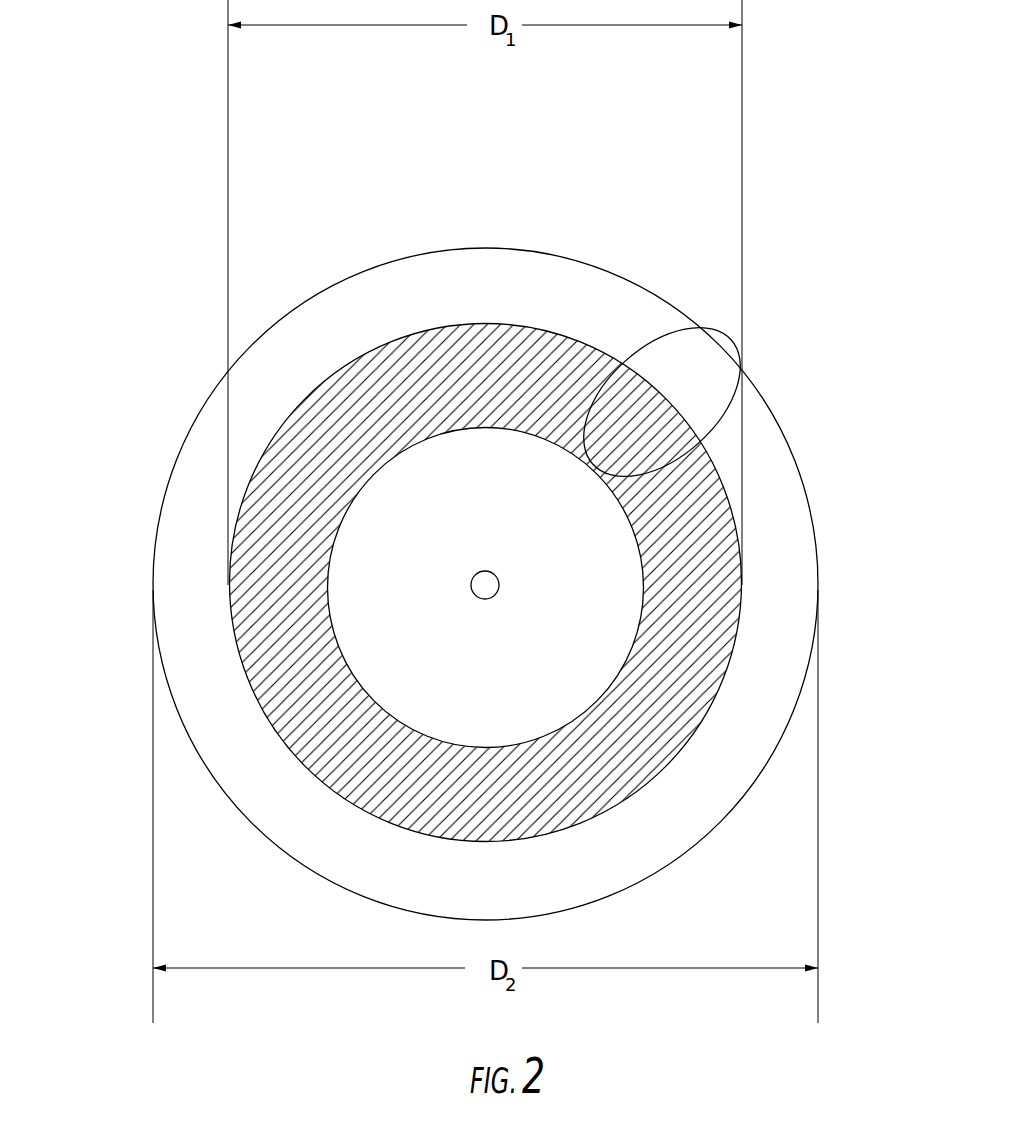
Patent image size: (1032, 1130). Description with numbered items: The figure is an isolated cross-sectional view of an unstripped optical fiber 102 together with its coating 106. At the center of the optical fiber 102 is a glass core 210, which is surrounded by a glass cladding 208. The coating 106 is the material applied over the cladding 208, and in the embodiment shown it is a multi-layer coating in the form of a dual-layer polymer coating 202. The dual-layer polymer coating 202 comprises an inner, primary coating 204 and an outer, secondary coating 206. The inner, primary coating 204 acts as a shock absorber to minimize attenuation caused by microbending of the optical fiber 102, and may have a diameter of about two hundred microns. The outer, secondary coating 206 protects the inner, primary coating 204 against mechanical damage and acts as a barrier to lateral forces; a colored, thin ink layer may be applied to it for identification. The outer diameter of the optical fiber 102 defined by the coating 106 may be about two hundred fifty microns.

The optical fiber 102 is at (84, 476).
The coating 106 is at (630, 247).
The dual-layer polymer coating 202 is at (728, 345).
The inner, primary coating 204 is at (690, 467).
The outer, secondary coating 206 is at (643, 322).
The glass cladding 208 is at (545, 640).
The glass core 210 is at (499, 587).